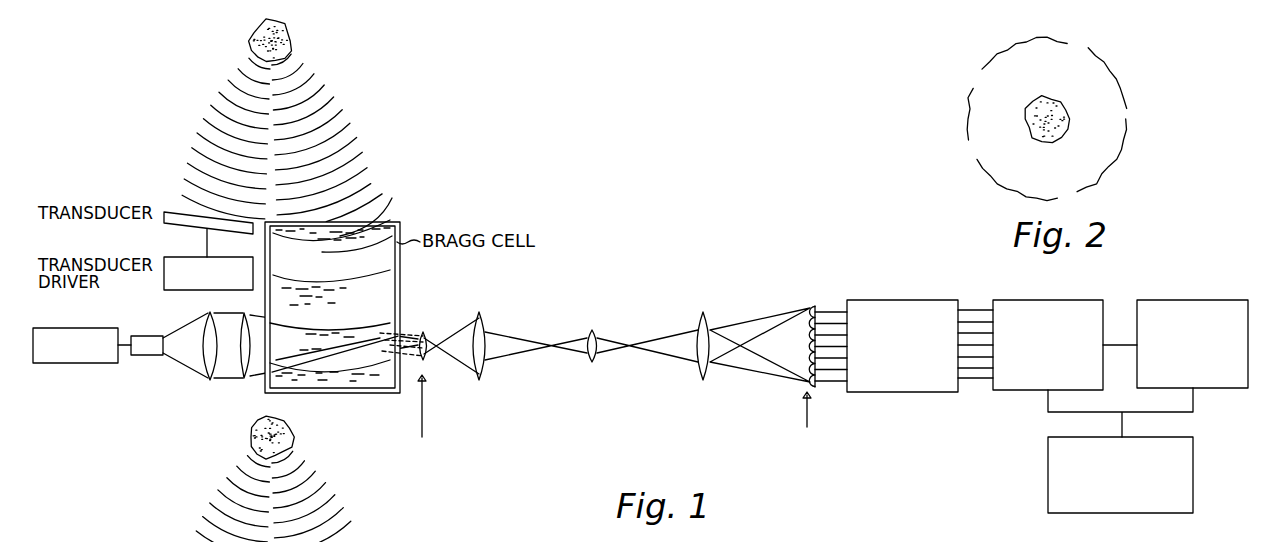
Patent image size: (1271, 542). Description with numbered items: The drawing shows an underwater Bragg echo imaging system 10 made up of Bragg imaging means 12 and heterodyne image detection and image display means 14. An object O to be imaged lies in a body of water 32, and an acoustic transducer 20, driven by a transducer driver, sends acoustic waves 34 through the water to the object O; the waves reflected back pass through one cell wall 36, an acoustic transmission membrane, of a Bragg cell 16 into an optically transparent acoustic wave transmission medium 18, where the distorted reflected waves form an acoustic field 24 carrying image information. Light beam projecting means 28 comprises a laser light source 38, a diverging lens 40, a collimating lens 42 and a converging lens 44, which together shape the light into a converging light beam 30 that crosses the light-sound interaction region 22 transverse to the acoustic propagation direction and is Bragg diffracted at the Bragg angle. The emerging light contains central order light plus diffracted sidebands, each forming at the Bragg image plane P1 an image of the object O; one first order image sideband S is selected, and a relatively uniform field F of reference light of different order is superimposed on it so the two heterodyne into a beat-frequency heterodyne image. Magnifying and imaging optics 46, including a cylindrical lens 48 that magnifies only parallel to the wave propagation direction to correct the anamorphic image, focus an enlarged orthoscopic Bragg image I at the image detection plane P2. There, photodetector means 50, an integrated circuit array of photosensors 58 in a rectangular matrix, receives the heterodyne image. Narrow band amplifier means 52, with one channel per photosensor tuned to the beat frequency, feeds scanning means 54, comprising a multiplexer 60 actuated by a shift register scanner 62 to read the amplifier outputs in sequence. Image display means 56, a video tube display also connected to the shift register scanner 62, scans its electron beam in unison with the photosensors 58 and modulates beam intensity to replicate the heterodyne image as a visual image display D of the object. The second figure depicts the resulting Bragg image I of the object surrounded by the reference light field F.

In FIG. 1, the Bragg imaging system 10 is at (677, 157).
In FIG. 1, the Bragg imaging means 12 is at (390, 146).
In FIG. 1, the heterodyne image detection and image display means 14 is at (876, 243).
In FIG. 1, the Bragg cell 16 is at (365, 393).
In FIG. 1, the acoustic wave transmission medium 18 is at (388, 287).
In FIG. 1, the acoustic transducer 20 is at (174, 212).
In FIG. 1, the light-sound interaction region 22 is at (330, 355).
In FIG. 1, the acoustic field 24 is at (382, 250).
In FIG. 1, the light beam projecting means 28 is at (186, 379).
In FIG. 1, the light beam 30 is at (267, 312).
In FIG. 1, the body of water 32 is at (337, 103).
In FIG. 1, the acoustic waves 34 is at (222, 108).
In FIG. 1, the cell wall 36 is at (385, 222).
In FIG. 1, the light source 38 is at (78, 358).
In FIG. 1, the diverging lens 40 is at (148, 355).
In FIG. 1, the collimating lens 42 is at (206, 378).
In FIG. 1, the converging lens 44 is at (243, 378).
In FIG. 1, the magnifying and imaging optics 46 is at (658, 400).
In FIG. 1, the cylindrical lens 48 is at (426, 332).
In FIG. 1, the photodetector means 50 is at (812, 298).
In FIG. 1, the narrow band amplifier means 52 is at (900, 300).
In FIG. 1, the scanning means 54 is at (1042, 413).
In FIG. 1, the image display means 56 is at (1174, 300).
In FIG. 1, the photosensors 58 is at (804, 320).
In FIG. 1, the multiplexer 60 is at (1049, 300).
In FIG. 1, the shift register scanner 62 is at (1185, 470).
In FIG. 1, the object O is at (250, 40).
In FIG. 1, the image sideband S is at (425, 357).
In FIG. 1, the Bragg image plane P1 is at (427, 419).
In FIG. 1, the image detection plane P2 is at (809, 426).
In FIG. 1, the image display D is at (1218, 300).
In FIG. 2, the Bragg image I is at (1029, 109).
In FIG. 2, the reference light field F is at (1117, 105).